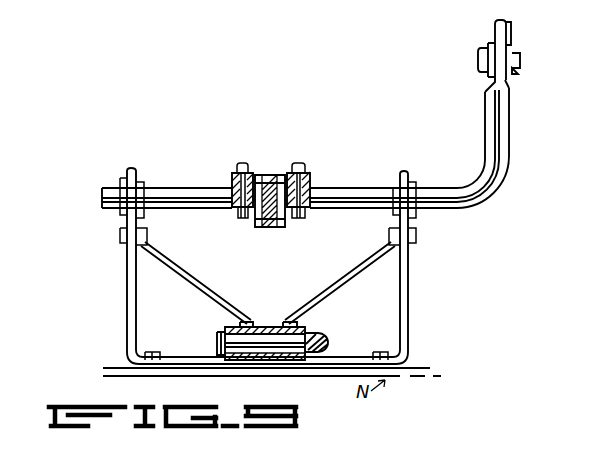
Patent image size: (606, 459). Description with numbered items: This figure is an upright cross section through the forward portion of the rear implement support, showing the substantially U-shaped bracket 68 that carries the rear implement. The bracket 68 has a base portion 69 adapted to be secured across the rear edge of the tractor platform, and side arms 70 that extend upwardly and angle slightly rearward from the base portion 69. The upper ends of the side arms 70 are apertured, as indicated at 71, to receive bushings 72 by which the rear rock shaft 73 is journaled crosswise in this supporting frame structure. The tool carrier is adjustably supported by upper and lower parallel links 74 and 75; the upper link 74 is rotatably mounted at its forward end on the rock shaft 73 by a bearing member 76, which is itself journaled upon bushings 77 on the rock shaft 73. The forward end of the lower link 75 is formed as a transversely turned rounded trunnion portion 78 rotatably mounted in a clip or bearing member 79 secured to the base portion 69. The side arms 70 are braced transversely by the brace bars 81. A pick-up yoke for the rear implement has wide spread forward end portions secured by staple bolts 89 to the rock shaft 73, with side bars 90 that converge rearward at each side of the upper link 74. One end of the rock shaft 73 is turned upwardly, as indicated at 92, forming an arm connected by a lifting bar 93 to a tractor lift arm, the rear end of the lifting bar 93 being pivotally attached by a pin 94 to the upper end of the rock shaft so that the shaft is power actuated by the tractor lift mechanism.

The U-shaped bracket 68 is at (417, 275).
The base portion 69 is at (409, 360).
The side arms 70 is at (127, 300).
The apertures 71 is at (136, 174).
The bushings 72 is at (138, 190).
The rear rock shaft 73 is at (199, 188).
The upper link 74 is at (272, 227).
The lower link 75 is at (318, 343).
The bearing member 76 is at (266, 175).
The bushings 77 is at (290, 172).
The trunnion portion 78 is at (263, 334).
The clip or bearing member 79 is at (288, 362).
The brace bars 81 is at (198, 293).
The staple bolts 89 is at (303, 170).
The side bars 90 is at (312, 186).
The upturned end of rock shaft 92 is at (511, 130).
The lifting bar 93 is at (507, 30).
The pin 94 is at (527, 63).